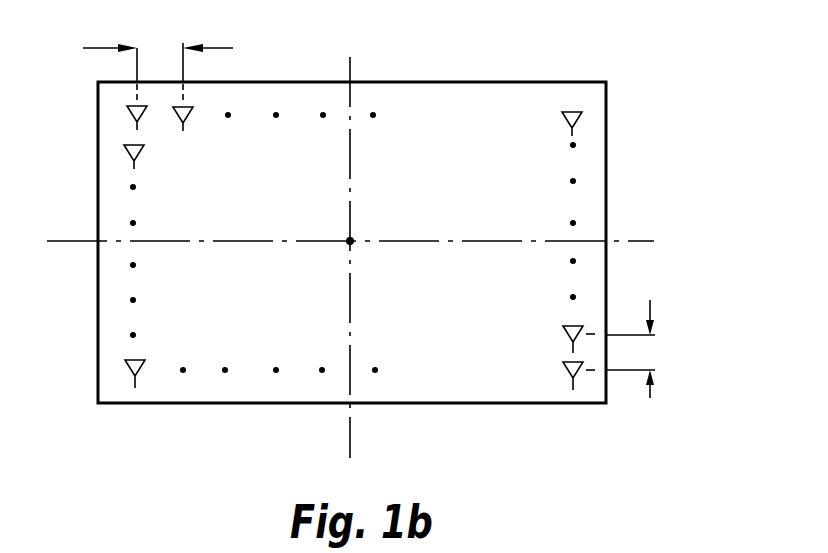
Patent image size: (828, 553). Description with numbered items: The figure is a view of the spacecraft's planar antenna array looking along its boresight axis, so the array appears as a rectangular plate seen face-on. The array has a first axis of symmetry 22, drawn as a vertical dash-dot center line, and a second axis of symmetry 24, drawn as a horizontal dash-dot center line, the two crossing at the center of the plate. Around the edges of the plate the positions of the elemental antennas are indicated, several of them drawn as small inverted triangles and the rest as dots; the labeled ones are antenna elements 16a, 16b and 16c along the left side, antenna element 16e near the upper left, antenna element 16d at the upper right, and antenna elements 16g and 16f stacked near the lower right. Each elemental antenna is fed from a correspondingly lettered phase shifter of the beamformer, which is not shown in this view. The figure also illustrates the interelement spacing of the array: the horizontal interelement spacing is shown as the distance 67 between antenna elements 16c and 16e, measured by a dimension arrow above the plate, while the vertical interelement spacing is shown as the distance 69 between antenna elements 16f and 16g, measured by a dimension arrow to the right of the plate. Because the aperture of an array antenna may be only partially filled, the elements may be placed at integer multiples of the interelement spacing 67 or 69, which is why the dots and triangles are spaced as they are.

The antenna element 16a is at (126, 366).
The antenna element 16b is at (125, 148).
The antenna element 16c is at (128, 108).
The antenna element 16d is at (580, 124).
The antenna element 16e is at (187, 121).
The antenna element 16f is at (565, 372).
The antenna element 16g is at (565, 331).
The first axis of symmetry 22 is at (352, 240).
The second axis of symmetry 24 is at (642, 240).
The horizontal interelement spacing 67 is at (223, 48).
The vertical interelement spacing 69 is at (652, 397).